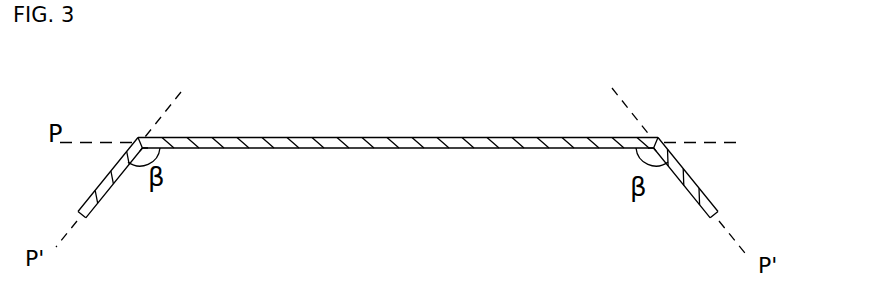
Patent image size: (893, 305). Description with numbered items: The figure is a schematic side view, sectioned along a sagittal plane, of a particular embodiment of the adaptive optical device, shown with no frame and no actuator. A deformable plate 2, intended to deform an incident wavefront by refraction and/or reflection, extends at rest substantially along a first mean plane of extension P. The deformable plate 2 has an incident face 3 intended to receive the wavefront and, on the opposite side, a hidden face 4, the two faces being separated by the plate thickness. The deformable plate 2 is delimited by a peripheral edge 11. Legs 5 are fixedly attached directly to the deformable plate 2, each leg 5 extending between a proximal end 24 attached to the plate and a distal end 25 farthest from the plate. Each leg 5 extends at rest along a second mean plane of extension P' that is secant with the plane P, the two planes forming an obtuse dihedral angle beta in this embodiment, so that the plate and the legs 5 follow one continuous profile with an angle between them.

The deformable plate 2 is at (398, 140).
The incident face 3 is at (375, 137).
The hidden face 4 is at (333, 148).
The legs 5 is at (114, 183).
The peripheral edge 11 is at (138, 137).
The proximal end 24 is at (135, 146).
The distal end 25 is at (88, 218).